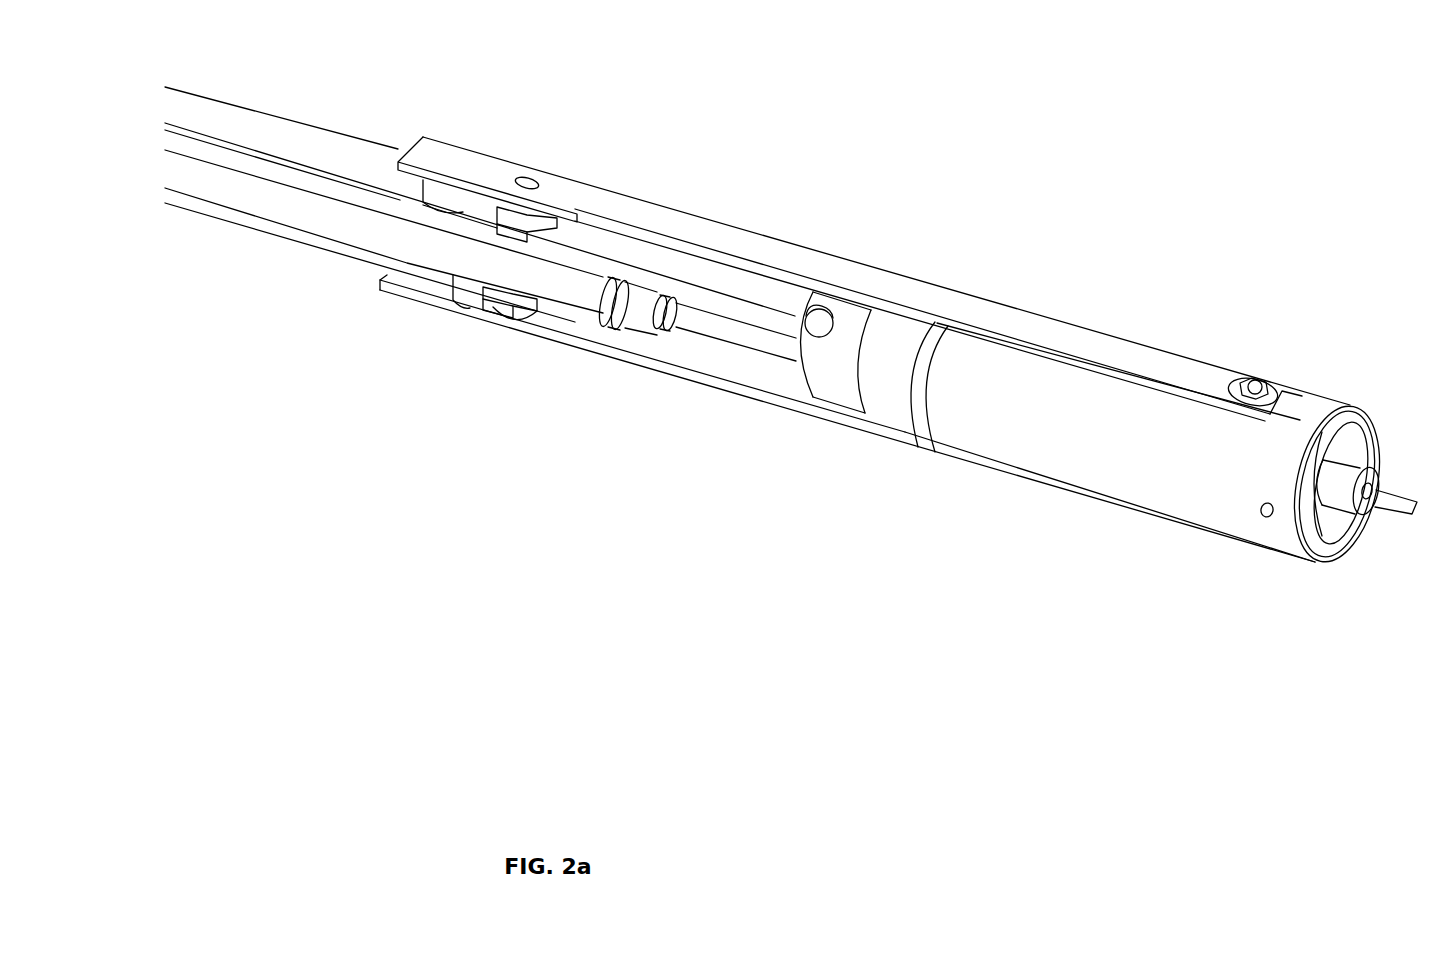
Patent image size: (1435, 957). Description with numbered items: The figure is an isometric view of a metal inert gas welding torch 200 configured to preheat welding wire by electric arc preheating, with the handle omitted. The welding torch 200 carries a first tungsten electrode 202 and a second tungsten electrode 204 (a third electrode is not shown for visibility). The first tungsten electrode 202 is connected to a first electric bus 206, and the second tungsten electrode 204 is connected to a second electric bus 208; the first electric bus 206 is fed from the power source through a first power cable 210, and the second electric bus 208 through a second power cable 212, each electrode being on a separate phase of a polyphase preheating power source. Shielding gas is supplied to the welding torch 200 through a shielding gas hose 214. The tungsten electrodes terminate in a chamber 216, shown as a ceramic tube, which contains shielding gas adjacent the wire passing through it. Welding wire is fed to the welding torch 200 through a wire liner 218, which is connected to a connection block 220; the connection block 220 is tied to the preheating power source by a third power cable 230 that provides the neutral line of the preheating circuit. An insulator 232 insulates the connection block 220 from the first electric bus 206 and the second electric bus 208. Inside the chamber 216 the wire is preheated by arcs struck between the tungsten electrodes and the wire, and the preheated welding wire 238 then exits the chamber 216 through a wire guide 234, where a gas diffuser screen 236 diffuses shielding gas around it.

The welding torch 200 is at (900, 125).
The first tungsten electrode 202 is at (1251, 374).
The second tungsten electrode 204 is at (1218, 537).
The first electric bus 206 is at (1015, 314).
The second electric bus 208 is at (692, 360).
The first power cable 210 is at (288, 147).
The second power cable 212 is at (228, 208).
The shielding gas hose 214 is at (370, 223).
The chamber 216 is at (1140, 462).
The wire liner 218 is at (780, 318).
The connection block 220 is at (864, 318).
The third power cable 230 is at (670, 262).
The insulator 232 is at (893, 407).
The wire guide 234 is at (1339, 497).
The gas diffuser screen 236 is at (1341, 447).
The preheated welding wire 238 is at (1413, 503).